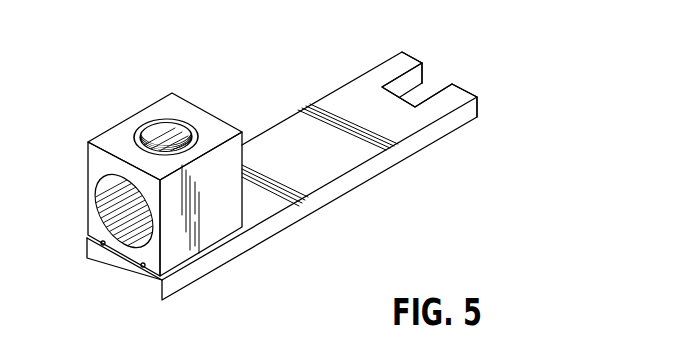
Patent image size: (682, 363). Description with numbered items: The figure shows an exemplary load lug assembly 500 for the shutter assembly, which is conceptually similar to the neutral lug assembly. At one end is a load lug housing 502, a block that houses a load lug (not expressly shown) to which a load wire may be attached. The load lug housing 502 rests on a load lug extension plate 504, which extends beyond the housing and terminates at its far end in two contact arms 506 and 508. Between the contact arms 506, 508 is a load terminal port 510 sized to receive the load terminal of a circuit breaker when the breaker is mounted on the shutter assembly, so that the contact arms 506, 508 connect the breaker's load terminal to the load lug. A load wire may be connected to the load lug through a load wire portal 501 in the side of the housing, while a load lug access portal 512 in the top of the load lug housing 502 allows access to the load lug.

The load lug assembly 500 is at (126, 89).
The load wire portal 501 is at (97, 222).
The load lug housing 502 is at (112, 143).
The load lug extension plate 504 is at (252, 238).
The contact arm 506 is at (474, 94).
The contact arm 508 is at (412, 58).
The load terminal port 510 is at (417, 95).
The load lug access portal 512 is at (189, 127).